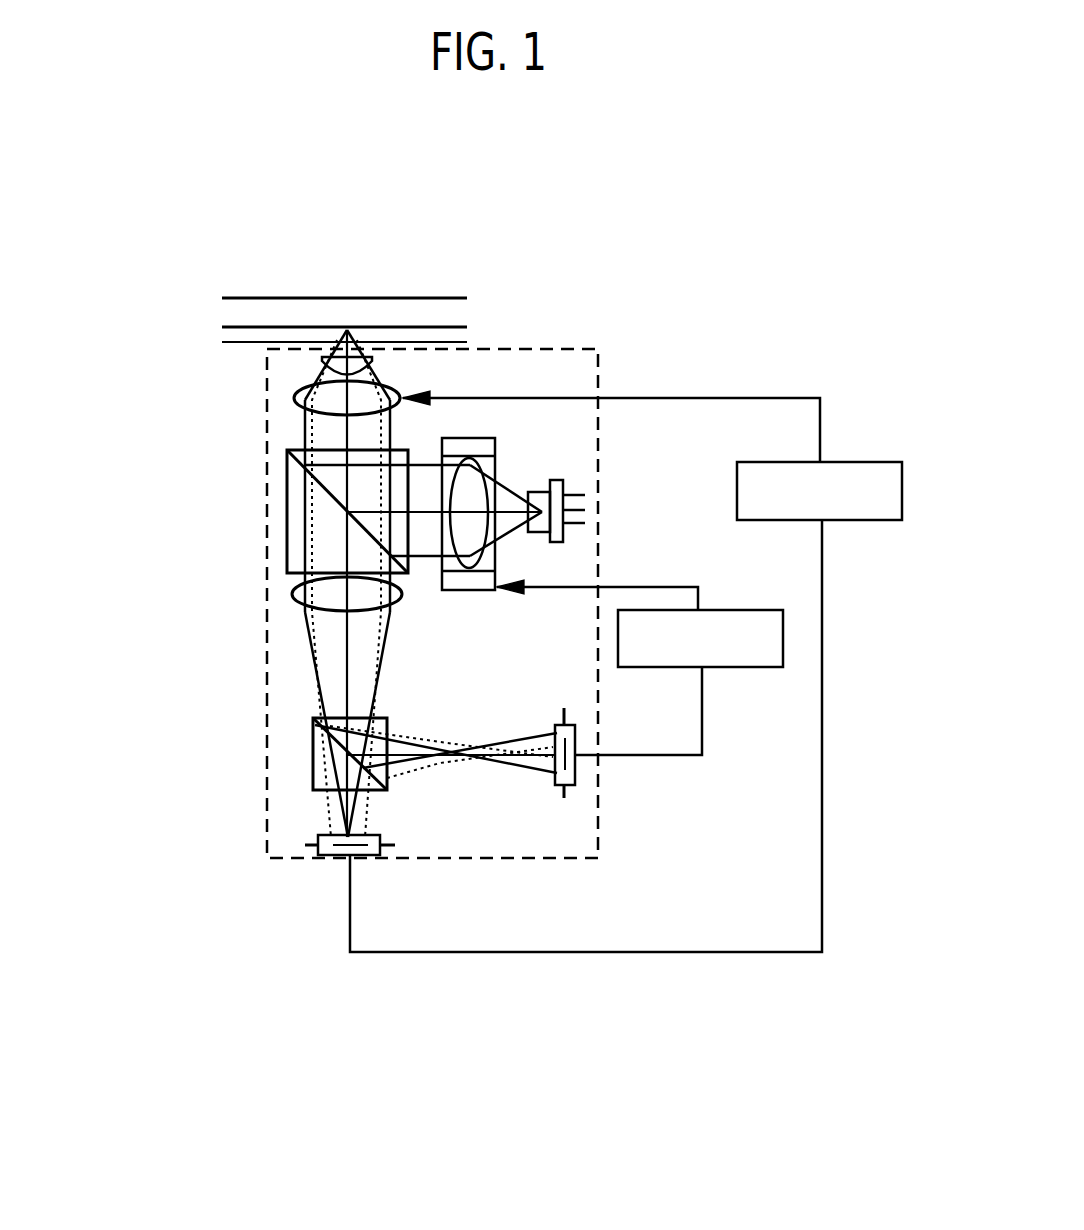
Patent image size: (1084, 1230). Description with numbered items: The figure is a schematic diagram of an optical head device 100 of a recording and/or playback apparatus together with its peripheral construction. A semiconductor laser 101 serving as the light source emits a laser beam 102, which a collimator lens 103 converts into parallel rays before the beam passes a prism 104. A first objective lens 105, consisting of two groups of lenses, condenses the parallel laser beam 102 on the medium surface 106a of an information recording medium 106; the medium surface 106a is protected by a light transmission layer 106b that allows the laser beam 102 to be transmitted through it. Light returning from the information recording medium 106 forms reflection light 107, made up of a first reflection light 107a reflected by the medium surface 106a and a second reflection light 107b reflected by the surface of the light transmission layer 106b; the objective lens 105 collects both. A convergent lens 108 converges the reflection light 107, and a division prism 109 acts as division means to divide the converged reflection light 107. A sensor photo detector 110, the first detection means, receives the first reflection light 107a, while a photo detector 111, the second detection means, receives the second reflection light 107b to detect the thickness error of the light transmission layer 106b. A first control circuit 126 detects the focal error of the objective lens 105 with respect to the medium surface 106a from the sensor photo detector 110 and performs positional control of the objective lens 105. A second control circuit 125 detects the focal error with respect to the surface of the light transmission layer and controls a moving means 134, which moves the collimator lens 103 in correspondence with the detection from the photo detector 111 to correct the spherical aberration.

The optical head device 100 is at (600, 460).
The semiconductor laser 101 is at (557, 547).
The laser beam 102 is at (507, 480).
The collimator lens 103 is at (510, 537).
The prism 104 is at (297, 532).
The first objective lens 105 is at (298, 374).
The information recording medium 106 is at (342, 265).
The medium surface 106a is at (265, 327).
The light transmission layer 106b is at (233, 338).
The reflection light 107 is at (335, 428).
The first reflection light 107a is at (360, 800).
The second reflection light 107b is at (520, 767).
The convergent lens 108 is at (293, 596).
The division prism 109 is at (313, 753).
The sensor photo detector 110 is at (333, 857).
The photo detector 111 is at (577, 770).
The second control circuit 125 is at (728, 668).
The first control circuit 126 is at (828, 462).
The moving means 134 is at (470, 438).